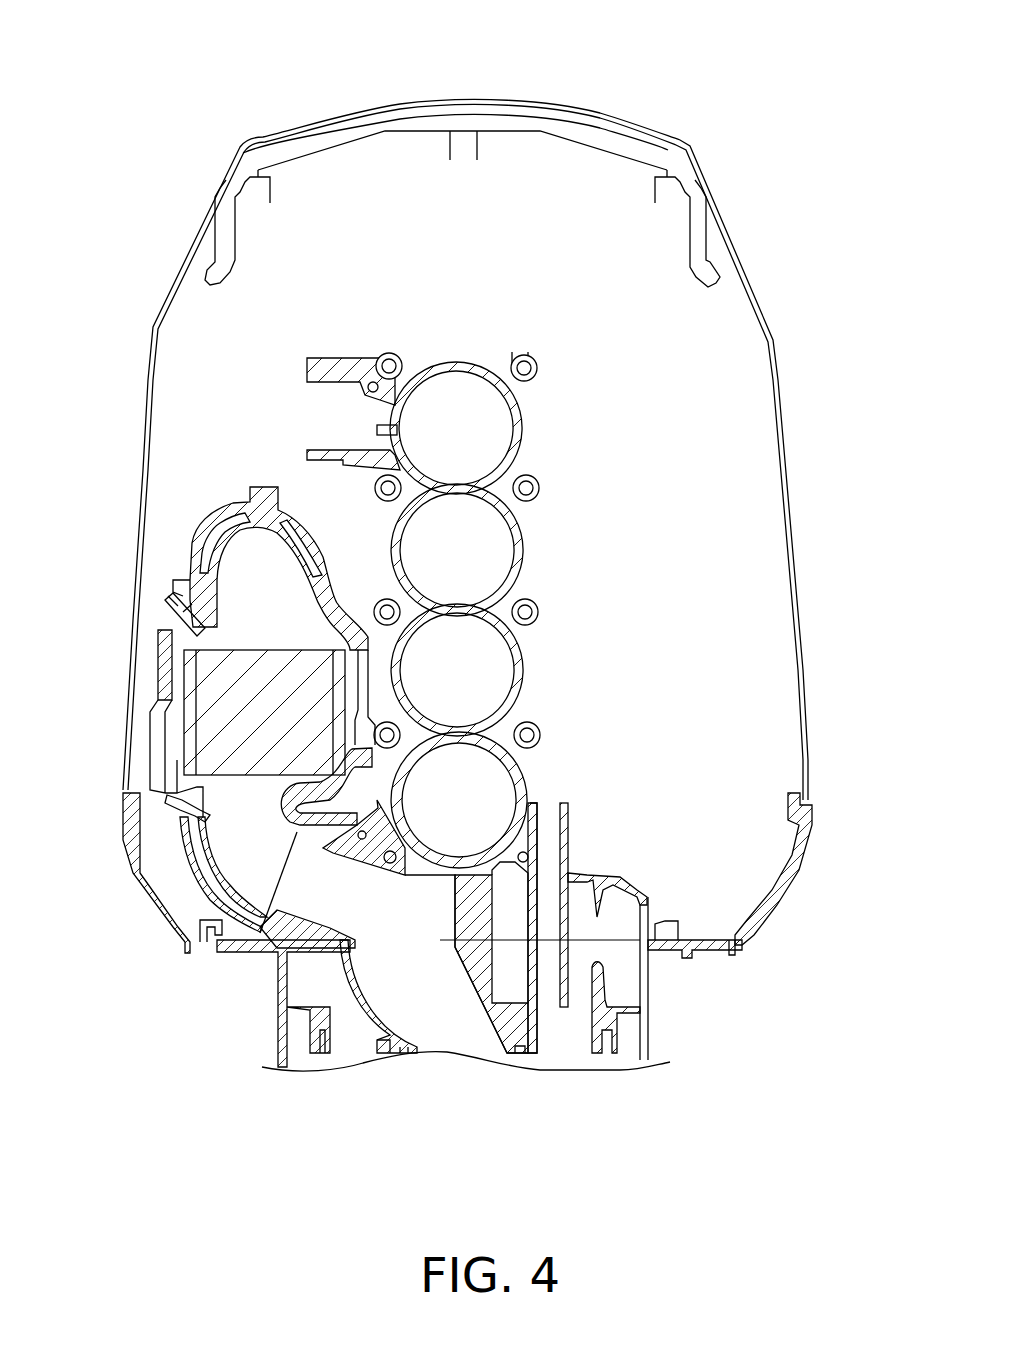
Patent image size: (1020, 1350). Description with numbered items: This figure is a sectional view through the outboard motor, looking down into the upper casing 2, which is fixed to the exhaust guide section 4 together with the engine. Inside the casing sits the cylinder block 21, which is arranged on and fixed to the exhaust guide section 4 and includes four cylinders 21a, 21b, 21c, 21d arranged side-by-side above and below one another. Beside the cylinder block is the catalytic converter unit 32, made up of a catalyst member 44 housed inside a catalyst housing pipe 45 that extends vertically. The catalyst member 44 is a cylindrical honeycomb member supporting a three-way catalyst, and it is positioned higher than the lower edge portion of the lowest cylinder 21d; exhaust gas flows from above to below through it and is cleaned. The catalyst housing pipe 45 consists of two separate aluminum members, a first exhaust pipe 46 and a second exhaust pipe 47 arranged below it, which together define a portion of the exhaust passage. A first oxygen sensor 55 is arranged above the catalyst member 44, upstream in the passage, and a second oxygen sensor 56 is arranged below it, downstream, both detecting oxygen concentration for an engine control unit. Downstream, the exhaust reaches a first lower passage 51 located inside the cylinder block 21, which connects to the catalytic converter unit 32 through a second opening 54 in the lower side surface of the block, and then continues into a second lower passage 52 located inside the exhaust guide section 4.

The upper casing 2 is at (607, 118).
The cylinder block 21 is at (591, 554).
The cylinder 21a is at (520, 428).
The cylinder 21b is at (520, 557).
The cylinder 21c is at (520, 667).
The cylinder 21d is at (520, 785).
The first exhaust pipe 46 is at (192, 543).
The first oxygen sensor 55 is at (170, 604).
The catalytic converter unit 32 is at (147, 677).
The catalyst member 44 is at (235, 700).
The catalyst housing pipe 45 is at (147, 733).
The second oxygen sensor 56 is at (195, 820).
The second opening 54 is at (281, 867).
The second exhaust pipe 47 is at (207, 887).
The first lower passage 51 is at (358, 913).
The exhaust guide section 4 is at (278, 1010).
The second lower passage 52 is at (403, 1010).